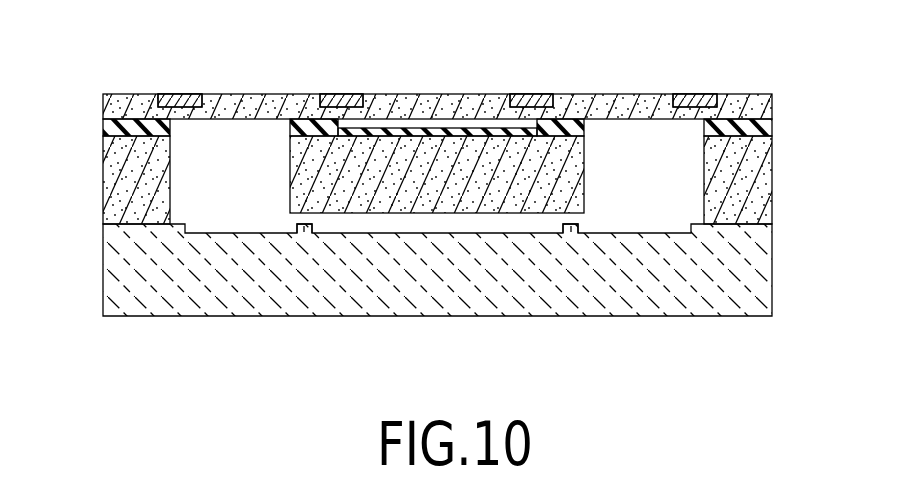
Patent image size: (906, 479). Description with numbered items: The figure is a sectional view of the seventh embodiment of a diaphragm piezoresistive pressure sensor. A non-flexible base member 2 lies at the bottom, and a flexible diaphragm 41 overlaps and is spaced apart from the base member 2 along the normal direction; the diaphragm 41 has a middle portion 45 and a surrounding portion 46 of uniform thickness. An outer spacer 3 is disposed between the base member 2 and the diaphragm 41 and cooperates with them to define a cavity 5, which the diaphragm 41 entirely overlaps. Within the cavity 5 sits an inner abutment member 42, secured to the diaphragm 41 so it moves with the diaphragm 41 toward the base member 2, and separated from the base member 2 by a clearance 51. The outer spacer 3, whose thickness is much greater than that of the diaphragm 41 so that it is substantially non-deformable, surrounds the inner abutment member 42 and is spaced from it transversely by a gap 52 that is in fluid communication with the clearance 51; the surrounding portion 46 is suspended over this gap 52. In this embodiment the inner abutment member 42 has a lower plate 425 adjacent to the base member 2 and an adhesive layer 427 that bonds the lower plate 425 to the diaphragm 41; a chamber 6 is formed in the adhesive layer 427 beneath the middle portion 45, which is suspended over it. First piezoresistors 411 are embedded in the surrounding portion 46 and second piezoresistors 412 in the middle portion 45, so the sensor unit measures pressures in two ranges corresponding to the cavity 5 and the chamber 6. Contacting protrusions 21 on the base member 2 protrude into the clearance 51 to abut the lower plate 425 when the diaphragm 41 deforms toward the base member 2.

The non-flexible base member 2 is at (667, 303).
The contacting protrusions 21 is at (303, 230).
The outer spacer 3 is at (118, 172).
The cavity 5 is at (205, 190).
The chamber 6 is at (409, 128).
The flexible diaphragm 41 is at (437, 62).
The first piezoresistor 411 is at (175, 97).
The second piezoresistor 412 is at (338, 97).
The inner abutment member 42 is at (478, 261).
The lower plate 425 is at (418, 207).
The adhesive layer 427 is at (289, 124).
The middle portion 45 is at (450, 97).
The surrounding portion 46 is at (248, 97).
The clearance 51 is at (473, 218).
The gap 52 is at (242, 183).